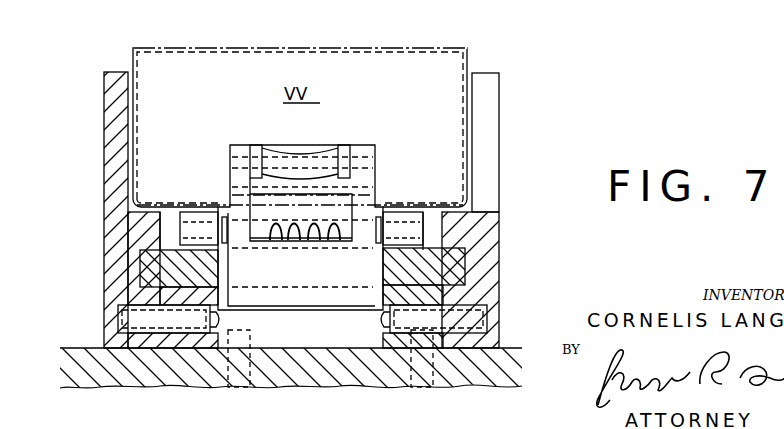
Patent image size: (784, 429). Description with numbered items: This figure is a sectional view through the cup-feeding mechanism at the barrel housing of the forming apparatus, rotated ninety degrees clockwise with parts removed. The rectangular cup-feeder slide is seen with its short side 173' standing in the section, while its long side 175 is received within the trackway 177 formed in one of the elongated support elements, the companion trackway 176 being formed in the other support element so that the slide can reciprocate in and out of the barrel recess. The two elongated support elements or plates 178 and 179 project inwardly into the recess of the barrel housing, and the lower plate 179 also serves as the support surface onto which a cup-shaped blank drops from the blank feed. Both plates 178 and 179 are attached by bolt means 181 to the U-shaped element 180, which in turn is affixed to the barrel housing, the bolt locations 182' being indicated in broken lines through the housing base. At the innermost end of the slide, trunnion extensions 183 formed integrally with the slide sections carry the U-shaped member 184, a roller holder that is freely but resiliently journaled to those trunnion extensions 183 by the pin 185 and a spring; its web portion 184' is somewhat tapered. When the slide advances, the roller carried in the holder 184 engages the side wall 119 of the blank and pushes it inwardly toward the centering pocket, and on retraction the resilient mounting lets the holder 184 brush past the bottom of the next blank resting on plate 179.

The side wall 119 is at (128, 117).
The short side 173' is at (348, 147).
The long side 175 is at (140, 263).
The trackway 176 is at (467, 257).
The trackway 177 is at (142, 250).
The elongated support element 178 is at (487, 278).
The elongated support element 179 is at (492, 118).
The U-shaped element 180 is at (343, 340).
The bolt means 181 is at (349, 258).
The mounting bolt 182' is at (355, 375).
The trunnion extension 183 is at (197, 212).
The U-shaped member 184 is at (322, 227).
The web portion 184' is at (301, 226).
The pin 185 is at (285, 225).